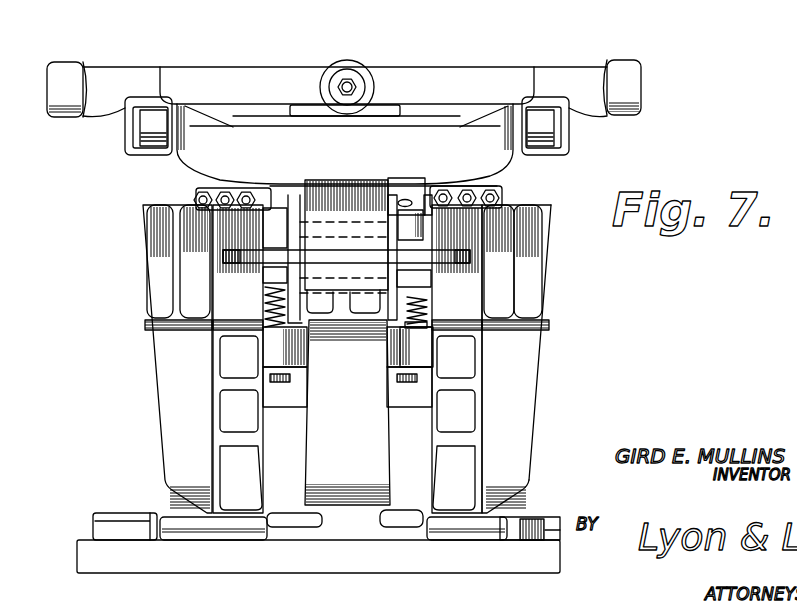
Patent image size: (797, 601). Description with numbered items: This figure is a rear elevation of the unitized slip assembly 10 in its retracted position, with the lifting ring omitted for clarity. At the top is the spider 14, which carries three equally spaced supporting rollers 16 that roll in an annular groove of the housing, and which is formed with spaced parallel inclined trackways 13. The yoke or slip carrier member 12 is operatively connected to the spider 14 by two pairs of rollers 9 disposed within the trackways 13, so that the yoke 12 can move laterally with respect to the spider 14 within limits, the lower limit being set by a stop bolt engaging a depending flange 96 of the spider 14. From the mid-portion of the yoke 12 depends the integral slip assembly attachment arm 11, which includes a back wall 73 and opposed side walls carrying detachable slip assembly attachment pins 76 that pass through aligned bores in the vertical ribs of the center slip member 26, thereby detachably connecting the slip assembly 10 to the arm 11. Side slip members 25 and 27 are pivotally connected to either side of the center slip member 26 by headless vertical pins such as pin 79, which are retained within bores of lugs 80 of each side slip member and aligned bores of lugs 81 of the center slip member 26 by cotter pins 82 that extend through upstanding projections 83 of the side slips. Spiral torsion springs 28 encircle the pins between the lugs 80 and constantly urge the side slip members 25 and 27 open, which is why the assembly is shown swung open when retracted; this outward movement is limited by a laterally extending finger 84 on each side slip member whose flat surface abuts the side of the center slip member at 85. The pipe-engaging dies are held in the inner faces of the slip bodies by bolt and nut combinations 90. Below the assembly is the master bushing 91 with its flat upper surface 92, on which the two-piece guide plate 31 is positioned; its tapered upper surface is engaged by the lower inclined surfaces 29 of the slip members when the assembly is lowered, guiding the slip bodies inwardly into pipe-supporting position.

The rollers 9 is at (147, 126).
The unitized slip assembly 10 is at (558, 286).
The arm 11 is at (298, 185).
The yoke 12 is at (495, 160).
The inclined trackways 13 is at (137, 148).
The spider 14 is at (493, 70).
The supporting rollers 16 is at (68, 68).
The side slip member 25 is at (177, 441).
The center slip member 26 is at (337, 473).
The side slip member 27 is at (520, 395).
The torsion springs 28 is at (267, 310).
The lower inclined surfaces 29 is at (227, 503).
The guide plate 31 is at (178, 530).
The back wall 73 is at (323, 192).
The slip assembly attachment pins 76 is at (423, 225).
The vertical pin 79 is at (415, 328).
The lugs 80 is at (268, 283).
The lugs 81 is at (428, 205).
The cotter pins 82 is at (413, 202).
The upstanding projections 83 is at (398, 203).
The finger 84 is at (248, 258).
The abutment point on center slip member 85 is at (410, 256).
The bolt and nut combinations 90 is at (197, 195).
The master bushing 91 is at (550, 558).
The flat upper surface 92 is at (500, 535).
The depending flange 96 is at (383, 108).